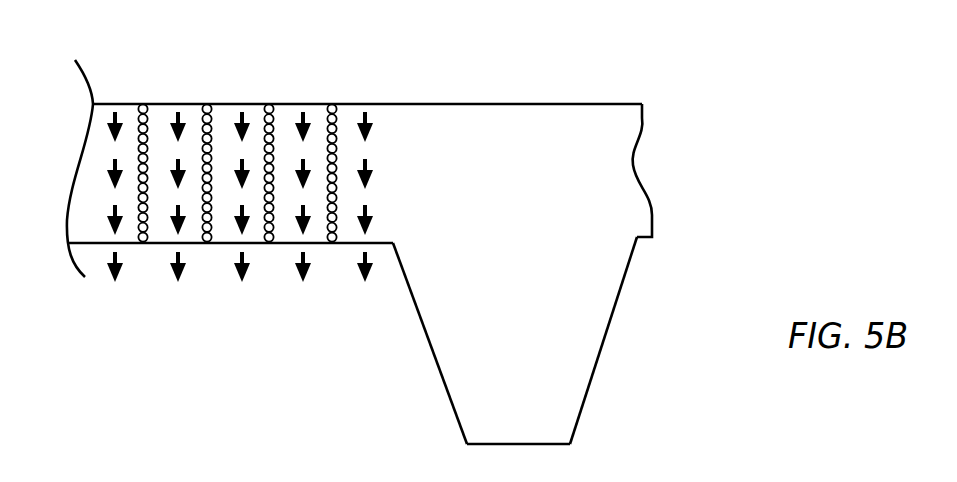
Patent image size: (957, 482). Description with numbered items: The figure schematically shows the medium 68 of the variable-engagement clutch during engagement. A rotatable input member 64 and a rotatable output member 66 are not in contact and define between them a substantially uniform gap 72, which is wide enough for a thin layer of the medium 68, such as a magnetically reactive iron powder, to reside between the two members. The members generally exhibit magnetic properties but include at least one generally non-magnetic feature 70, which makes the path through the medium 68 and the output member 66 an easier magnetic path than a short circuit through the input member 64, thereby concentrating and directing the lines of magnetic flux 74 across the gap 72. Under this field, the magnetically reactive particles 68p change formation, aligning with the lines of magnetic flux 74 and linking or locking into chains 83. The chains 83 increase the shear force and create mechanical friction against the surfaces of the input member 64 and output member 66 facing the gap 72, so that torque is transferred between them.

The input member 64 is at (408, 283).
The output member 66 is at (441, 104).
The medium 68 is at (293, 152).
The magnetically reactive particles 68p is at (238, 189).
The non-magnetic feature 70 is at (611, 324).
The gap 72 is at (500, 197).
The lines of magnetic flux 74 is at (180, 112).
The chains 83 is at (151, 145).